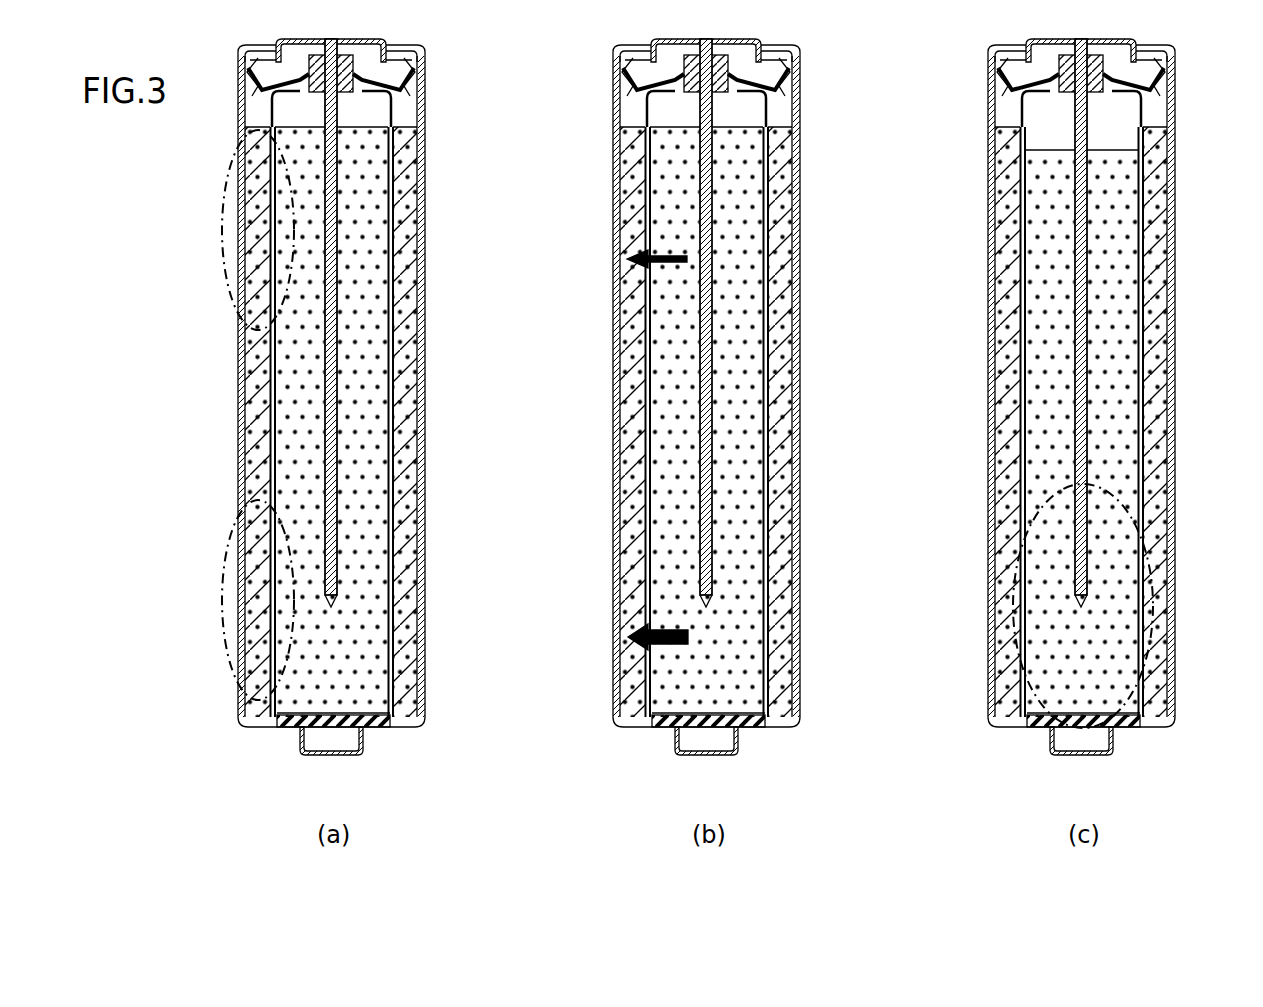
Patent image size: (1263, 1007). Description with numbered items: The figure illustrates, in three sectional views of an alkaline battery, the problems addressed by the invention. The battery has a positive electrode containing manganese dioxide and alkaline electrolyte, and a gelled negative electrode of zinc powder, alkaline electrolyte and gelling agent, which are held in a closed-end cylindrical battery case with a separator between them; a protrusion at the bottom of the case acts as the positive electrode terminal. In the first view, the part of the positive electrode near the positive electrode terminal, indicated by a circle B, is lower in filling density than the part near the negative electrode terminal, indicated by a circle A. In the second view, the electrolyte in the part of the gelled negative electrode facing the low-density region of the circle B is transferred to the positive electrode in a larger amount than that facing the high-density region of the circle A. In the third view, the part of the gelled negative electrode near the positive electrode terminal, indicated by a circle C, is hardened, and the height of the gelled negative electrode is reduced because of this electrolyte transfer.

The circle A is at (233, 300).
The circle B is at (232, 657).
The circle C is at (1076, 636).